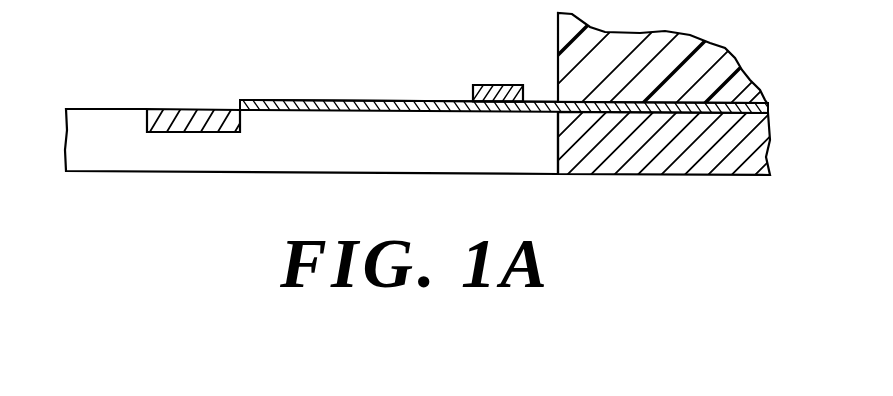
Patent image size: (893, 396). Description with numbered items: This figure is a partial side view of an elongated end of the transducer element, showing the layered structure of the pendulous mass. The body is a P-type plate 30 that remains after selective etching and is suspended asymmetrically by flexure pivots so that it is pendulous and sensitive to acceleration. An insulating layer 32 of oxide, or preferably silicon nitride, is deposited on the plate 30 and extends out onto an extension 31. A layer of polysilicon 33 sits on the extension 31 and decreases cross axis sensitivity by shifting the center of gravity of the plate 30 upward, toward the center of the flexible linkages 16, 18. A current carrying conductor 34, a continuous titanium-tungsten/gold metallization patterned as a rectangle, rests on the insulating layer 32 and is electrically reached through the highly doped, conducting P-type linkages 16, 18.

The flexible linkage 16 is at (184, 97).
The flexible linkage 18 is at (193, 109).
The P-type plate 30 is at (293, 91).
The extension 31 is at (633, 175).
The insulating layer 32 is at (366, 100).
The layer of polysilicon 33 is at (680, 75).
The current carrying conductor 34 is at (485, 85).